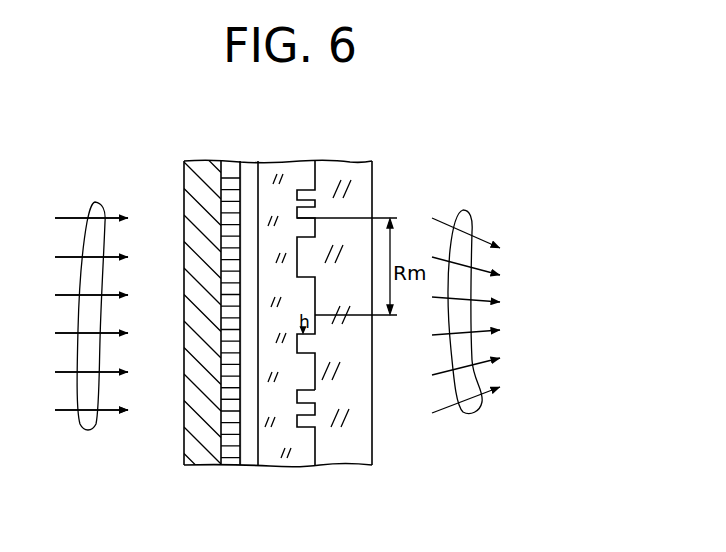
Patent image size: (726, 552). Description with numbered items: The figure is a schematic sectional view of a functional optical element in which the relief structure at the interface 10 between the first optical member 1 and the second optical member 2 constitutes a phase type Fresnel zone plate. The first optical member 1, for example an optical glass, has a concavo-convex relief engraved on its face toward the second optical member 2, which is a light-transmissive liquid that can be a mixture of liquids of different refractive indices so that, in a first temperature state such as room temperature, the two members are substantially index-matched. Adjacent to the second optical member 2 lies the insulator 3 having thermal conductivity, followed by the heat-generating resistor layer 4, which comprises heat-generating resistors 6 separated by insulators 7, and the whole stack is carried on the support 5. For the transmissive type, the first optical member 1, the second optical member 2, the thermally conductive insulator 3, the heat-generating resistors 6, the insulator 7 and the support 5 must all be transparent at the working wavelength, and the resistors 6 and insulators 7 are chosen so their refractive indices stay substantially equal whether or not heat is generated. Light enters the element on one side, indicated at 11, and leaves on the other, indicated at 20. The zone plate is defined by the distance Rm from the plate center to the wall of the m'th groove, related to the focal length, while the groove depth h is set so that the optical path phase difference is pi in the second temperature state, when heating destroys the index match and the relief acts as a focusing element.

The first optical member 1 is at (342, 172).
The second optical member 2 is at (296, 170).
The insulator having thermal conductivity 3 is at (257, 165).
The heat-generating resistor layer 4 is at (237, 162).
The support 5 is at (200, 173).
The heat-generating resistor 6 is at (232, 392).
The insulator 7 is at (225, 165).
The interface 10 is at (315, 445).
The incident light 11 is at (93, 432).
The emergent light 20 is at (478, 417).